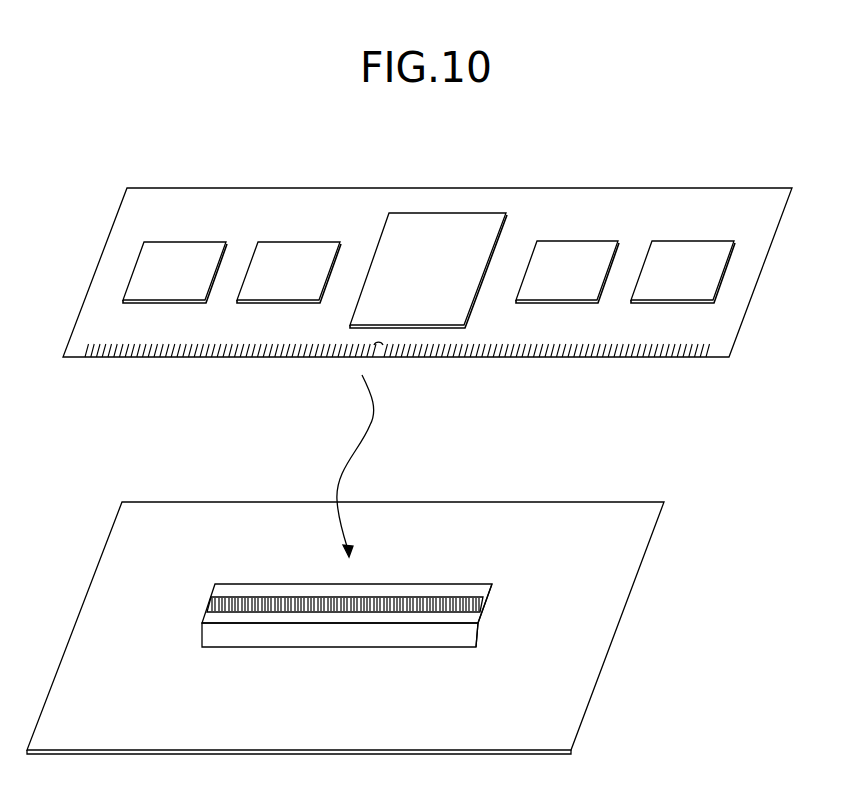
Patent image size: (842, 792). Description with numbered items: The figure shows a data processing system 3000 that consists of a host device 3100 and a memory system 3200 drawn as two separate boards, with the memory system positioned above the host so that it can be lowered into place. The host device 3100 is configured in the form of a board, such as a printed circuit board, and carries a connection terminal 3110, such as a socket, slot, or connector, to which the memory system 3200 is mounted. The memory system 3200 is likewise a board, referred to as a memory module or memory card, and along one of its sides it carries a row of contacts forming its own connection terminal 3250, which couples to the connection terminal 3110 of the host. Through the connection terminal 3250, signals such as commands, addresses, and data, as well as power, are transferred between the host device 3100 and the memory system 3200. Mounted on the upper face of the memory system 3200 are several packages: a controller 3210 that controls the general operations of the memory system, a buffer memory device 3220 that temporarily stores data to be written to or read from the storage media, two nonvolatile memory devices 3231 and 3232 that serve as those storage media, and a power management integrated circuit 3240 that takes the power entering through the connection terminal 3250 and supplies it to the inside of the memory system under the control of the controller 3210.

The data processing system 3000 is at (249, 147).
The memory system 3200 is at (427, 298).
The power management integrated circuit (PMIC) 3240 is at (175, 272).
The buffer memory device 3220 is at (289, 272).
The controller 3210 is at (428, 270).
The nonvolatile memory device 3231 is at (567, 272).
The nonvolatile memory device 3232 is at (683, 272).
The connection terminal 3250 is at (107, 357).
The host device 3100 is at (345, 628).
The connection terminal 3110 is at (517, 578).